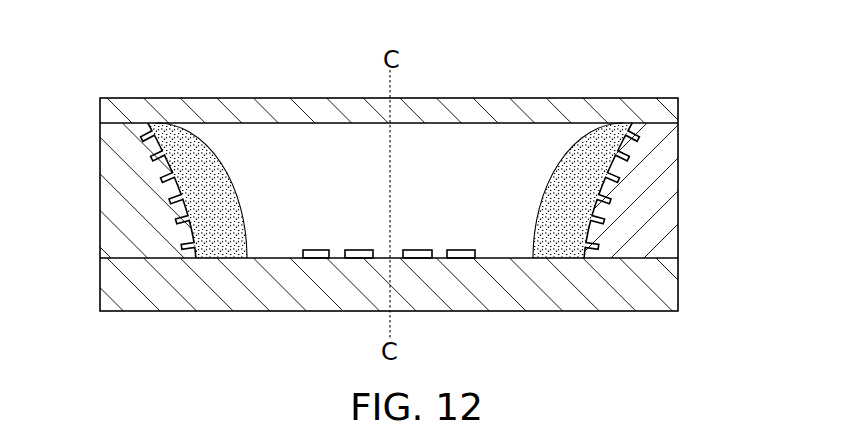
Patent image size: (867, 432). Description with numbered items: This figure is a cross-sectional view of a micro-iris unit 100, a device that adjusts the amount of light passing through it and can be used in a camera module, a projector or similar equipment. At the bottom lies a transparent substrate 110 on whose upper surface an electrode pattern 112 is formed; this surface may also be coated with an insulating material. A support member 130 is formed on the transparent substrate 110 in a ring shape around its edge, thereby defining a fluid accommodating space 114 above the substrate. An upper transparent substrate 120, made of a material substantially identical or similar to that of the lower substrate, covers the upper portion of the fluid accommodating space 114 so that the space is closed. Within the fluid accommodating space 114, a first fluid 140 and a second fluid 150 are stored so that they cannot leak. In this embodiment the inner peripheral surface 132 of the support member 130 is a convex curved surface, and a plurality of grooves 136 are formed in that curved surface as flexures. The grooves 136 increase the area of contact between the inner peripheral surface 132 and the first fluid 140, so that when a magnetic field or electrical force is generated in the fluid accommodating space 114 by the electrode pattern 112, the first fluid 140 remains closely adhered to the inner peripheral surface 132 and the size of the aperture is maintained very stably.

The micro-iris unit 100 is at (531, 77).
The transparent substrate 110 is at (667, 282).
The electrode pattern 112 is at (462, 259).
The fluid accommodating space 114 is at (478, 178).
The transparent substrate 120 is at (667, 110).
The support member 130 is at (667, 185).
The inner peripheral surface 132 is at (176, 190).
The grooves 136 is at (182, 207).
The first fluid 140 is at (212, 157).
The second fluid 150 is at (307, 140).